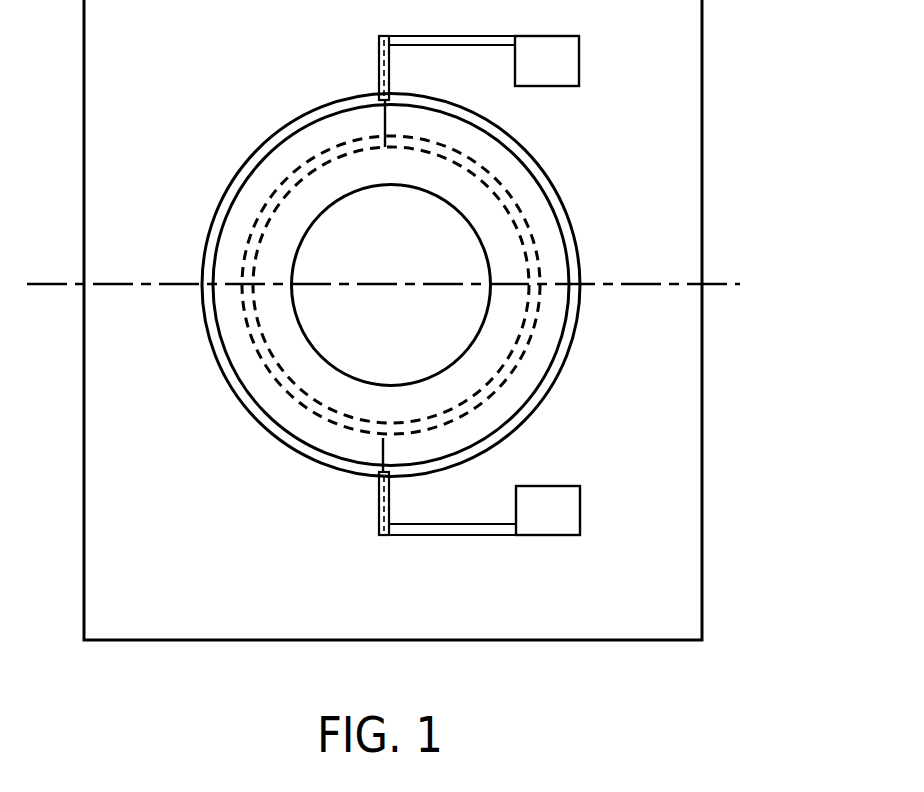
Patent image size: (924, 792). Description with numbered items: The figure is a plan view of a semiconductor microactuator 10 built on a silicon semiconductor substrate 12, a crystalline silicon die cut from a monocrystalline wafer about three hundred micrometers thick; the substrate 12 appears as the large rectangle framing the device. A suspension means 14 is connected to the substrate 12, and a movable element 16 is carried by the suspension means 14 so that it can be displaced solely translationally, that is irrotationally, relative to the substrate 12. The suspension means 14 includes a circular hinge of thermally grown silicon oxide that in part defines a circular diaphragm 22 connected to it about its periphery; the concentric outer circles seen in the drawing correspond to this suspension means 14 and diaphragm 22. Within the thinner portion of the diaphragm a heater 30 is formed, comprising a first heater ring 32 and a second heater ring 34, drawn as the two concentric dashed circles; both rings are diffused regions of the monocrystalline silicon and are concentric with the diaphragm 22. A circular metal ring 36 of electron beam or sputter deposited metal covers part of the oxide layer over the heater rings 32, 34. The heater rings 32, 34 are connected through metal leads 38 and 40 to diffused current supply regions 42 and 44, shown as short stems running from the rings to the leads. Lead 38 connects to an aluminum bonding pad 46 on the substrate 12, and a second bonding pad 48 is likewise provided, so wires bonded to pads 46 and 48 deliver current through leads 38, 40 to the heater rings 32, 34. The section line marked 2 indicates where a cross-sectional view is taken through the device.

The semiconductor microactuator 10 is at (585, 681).
The silicon semiconductor substrate 12 is at (122, 631).
The suspension means 14 is at (565, 223).
The movable element 16 is at (399, 257).
The circular diaphragm 22 is at (490, 157).
The heater 30 is at (379, 255).
The first heater ring 32 is at (335, 143).
The second heater ring 34 is at (345, 153).
The circular metal ring 36 is at (462, 377).
The metal lead 38 is at (380, 508).
The metal lead 40 is at (379, 57).
The diffused current supply region 42 is at (385, 453).
The diffused current supply region 44 is at (387, 123).
The aluminum bonding pad 46 is at (580, 517).
The bonding pad 48 is at (580, 60).
The section line 2- 2 is at (39, 300).